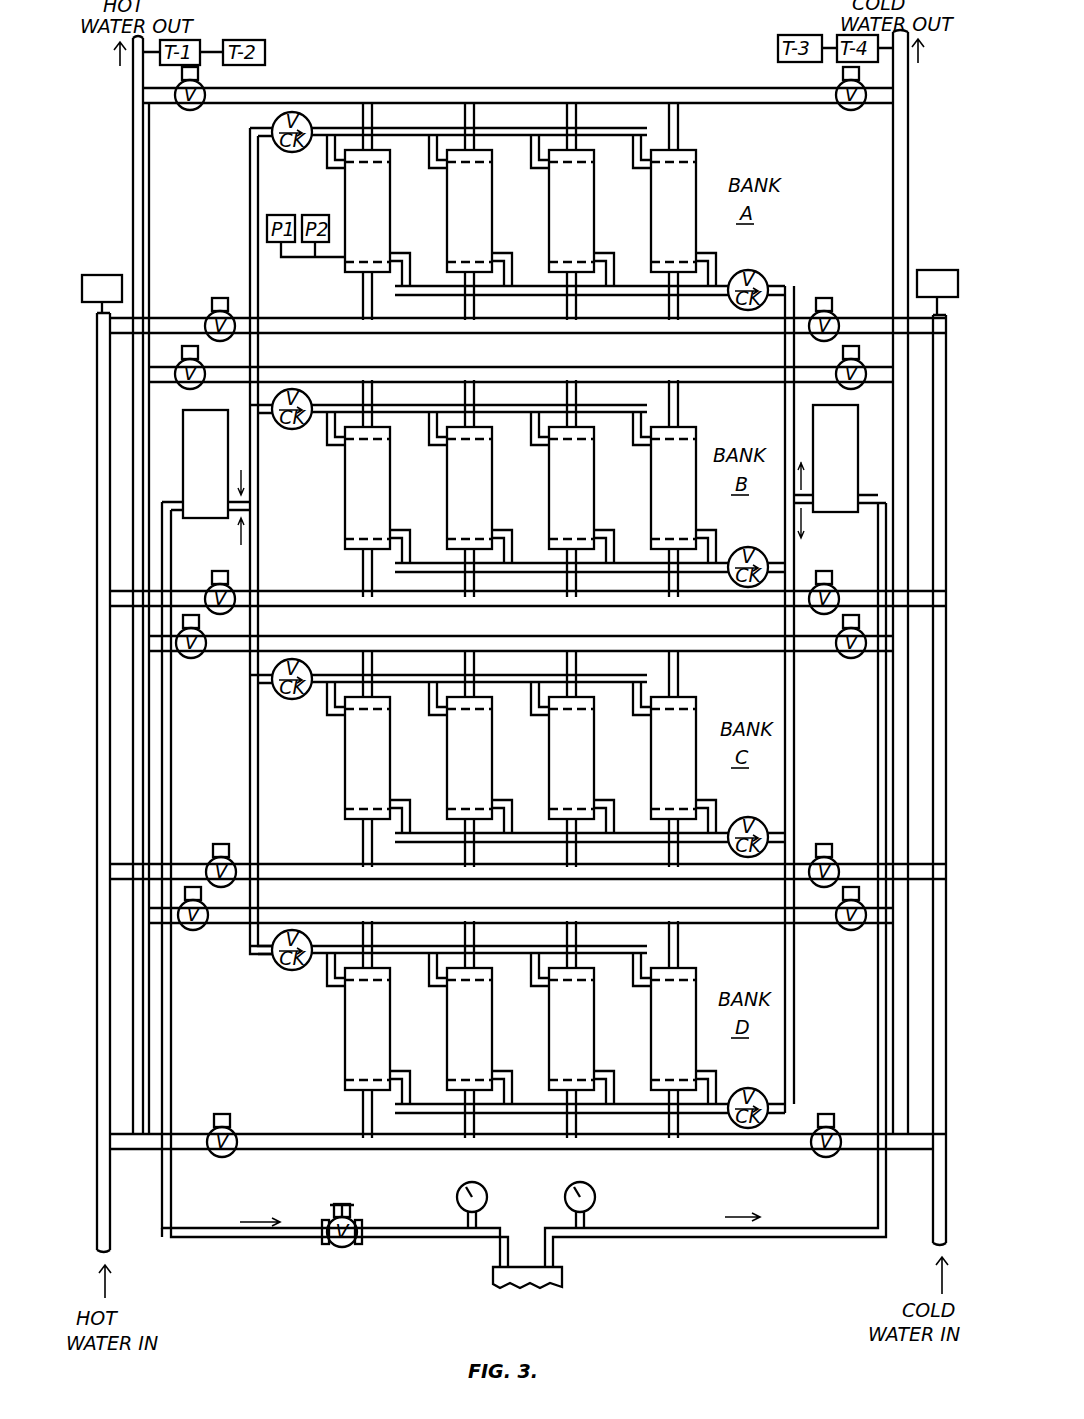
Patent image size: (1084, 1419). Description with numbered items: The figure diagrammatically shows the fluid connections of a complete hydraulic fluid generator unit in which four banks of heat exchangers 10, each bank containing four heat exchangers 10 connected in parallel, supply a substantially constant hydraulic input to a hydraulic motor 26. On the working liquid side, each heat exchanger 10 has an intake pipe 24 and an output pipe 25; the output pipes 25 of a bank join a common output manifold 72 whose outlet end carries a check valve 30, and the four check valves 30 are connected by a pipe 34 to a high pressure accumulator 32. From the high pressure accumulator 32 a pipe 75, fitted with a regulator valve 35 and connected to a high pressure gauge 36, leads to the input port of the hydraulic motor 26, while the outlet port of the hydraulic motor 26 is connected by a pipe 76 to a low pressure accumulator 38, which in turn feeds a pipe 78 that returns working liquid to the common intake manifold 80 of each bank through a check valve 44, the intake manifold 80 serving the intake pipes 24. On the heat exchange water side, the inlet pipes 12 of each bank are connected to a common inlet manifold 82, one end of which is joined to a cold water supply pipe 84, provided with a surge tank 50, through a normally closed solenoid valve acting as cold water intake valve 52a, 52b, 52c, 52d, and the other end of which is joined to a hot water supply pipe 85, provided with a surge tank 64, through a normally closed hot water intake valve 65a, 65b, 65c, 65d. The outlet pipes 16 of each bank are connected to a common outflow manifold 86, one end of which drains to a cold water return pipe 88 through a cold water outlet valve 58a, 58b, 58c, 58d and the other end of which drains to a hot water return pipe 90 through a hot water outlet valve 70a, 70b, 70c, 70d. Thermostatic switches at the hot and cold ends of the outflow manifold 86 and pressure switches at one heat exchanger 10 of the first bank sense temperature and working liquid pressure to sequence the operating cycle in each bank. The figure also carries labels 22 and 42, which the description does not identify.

The heat exchanger 10 is at (542, 616).
The inlet pipe 12 is at (499, 705).
The outlet pipe 16 is at (529, 535).
The tube jacket 22 is at (559, 628).
The intake pipe 24 is at (573, 666).
The output pipe 25 is at (470, 574).
The hydraulic motor 26 is at (562, 1275).
The check valve 30 is at (270, 128).
The high pressure accumulator 32 is at (183, 462).
The pipe 34 is at (259, 492).
The regulator valve 35 is at (338, 1248).
The high pressure gauge 36 is at (487, 1190).
The low pressure accumulator 38 is at (858, 442).
The pressure gauge 42 is at (594, 1189).
The check valve 44 is at (762, 683).
The surge tank 50 is at (935, 268).
The solenoid valve 52a is at (833, 313).
The solenoid valve 52b is at (833, 586).
The solenoid valve 52c is at (833, 858).
The solenoid valve 52d is at (834, 1128).
The solenoid valve 58a is at (851, 112).
The solenoid valve 58b is at (842, 385).
The solenoid valve 58c is at (851, 659).
The solenoid valve 58d is at (850, 931).
The surge tank 64 is at (101, 273).
The solenoid valve 65a is at (213, 311).
The solenoid valve 65b is at (213, 584).
The solenoid valve 65c is at (213, 856).
The solenoid valve 65d is at (213, 1128).
The solenoid valve 70a is at (190, 111).
The solenoid valve 70b is at (189, 390).
The solenoid valve 70c is at (194, 659).
The solenoid valve 70d is at (198, 931).
The output manifold 72 is at (479, 530).
The pipe 75 is at (172, 758).
The pipe 76 is at (826, 1225).
The pipe 78 is at (795, 792).
The intake manifold 80 is at (561, 710).
The inlet manifold 82 is at (541, 335).
The cold water supply pipe 84 is at (948, 712).
The hot water supply pipe 85 is at (96, 470).
The outflow manifold 86 is at (548, 88).
The cold water return pipe 88 is at (910, 162).
The hot water return pipe 90 is at (150, 206).